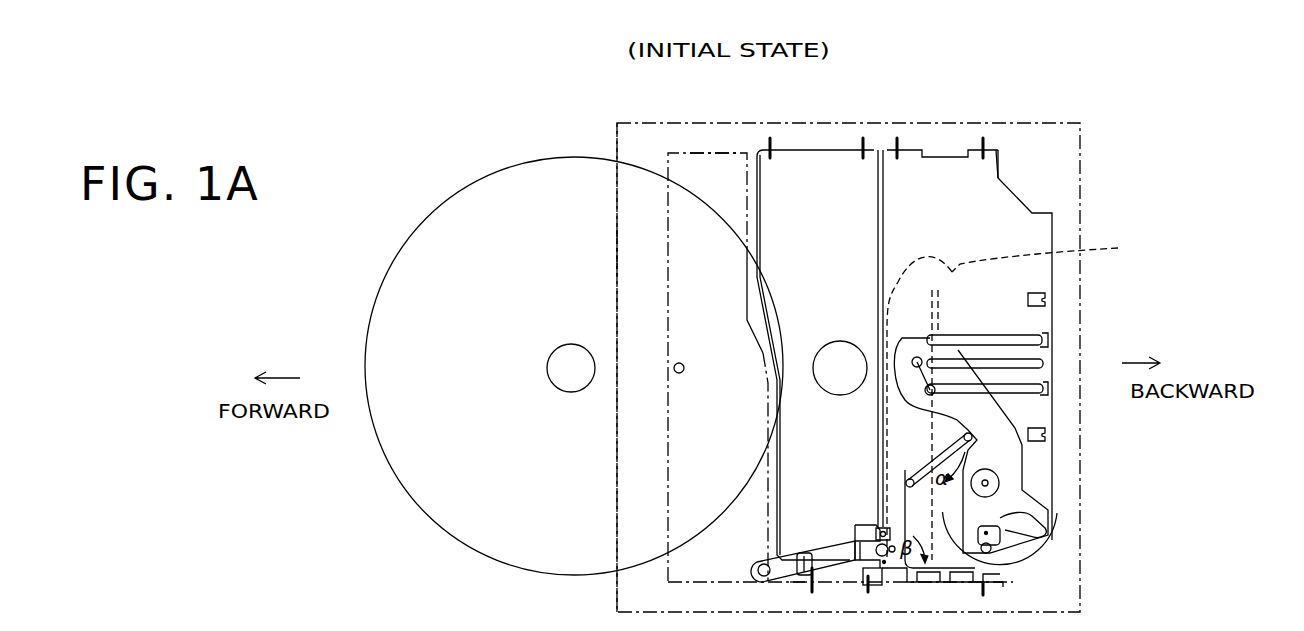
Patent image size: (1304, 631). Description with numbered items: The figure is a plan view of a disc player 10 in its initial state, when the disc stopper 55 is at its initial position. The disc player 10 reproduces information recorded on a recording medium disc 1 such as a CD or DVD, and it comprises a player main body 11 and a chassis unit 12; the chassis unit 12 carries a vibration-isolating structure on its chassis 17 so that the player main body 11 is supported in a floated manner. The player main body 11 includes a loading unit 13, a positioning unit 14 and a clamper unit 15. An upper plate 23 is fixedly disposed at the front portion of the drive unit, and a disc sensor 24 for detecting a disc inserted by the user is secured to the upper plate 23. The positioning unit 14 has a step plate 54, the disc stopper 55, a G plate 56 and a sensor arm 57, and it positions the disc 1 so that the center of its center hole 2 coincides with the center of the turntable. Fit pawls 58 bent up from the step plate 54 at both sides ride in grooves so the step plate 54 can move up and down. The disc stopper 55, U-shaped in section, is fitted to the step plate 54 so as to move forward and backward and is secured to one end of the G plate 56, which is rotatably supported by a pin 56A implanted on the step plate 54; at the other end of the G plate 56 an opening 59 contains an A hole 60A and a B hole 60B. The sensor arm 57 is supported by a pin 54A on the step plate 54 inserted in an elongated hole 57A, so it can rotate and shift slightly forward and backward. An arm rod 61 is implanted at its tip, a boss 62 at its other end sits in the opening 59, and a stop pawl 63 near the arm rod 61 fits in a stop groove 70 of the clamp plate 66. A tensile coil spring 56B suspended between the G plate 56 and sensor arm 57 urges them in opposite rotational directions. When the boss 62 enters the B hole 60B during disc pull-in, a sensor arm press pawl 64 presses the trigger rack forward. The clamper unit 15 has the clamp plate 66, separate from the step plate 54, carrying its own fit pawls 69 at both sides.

The recording medium disc 1 is at (441, 204).
The center hole 2 is at (550, 378).
The disc player 10 is at (1107, 125).
The player main body 11 is at (1043, 184).
The chassis unit 12 is at (622, 118).
The loading unit 13 is at (688, 148).
The positioning unit 14 is at (932, 154).
The clamper unit 15 is at (805, 146).
The chassis 17 is at (614, 251).
The upper plate 23 is at (715, 152).
The disc sensor 24 is at (676, 362).
The step plate 54 is at (1000, 168).
The pin 54A is at (878, 526).
The disc stopper 55 is at (1017, 395).
The G plate 56 is at (1020, 456).
The pin 56A is at (986, 481).
The tensile coil spring 56B is at (913, 480).
The sensor arm 57 is at (835, 555).
The elongated hole 57A is at (890, 546).
The fit pawls 58 is at (897, 138).
The opening 59 is at (1046, 520).
The A hole 60A is at (1000, 549).
The B hole 60B is at (1053, 540).
The arm rod 61 is at (762, 577).
The boss 62 is at (983, 548).
The stop pawl 63 is at (805, 553).
The sensor arm press pawl 64 is at (923, 583).
The clamp plate 66 is at (838, 150).
The fit pawls 69 is at (770, 138).
The stop groove 70 is at (800, 585).